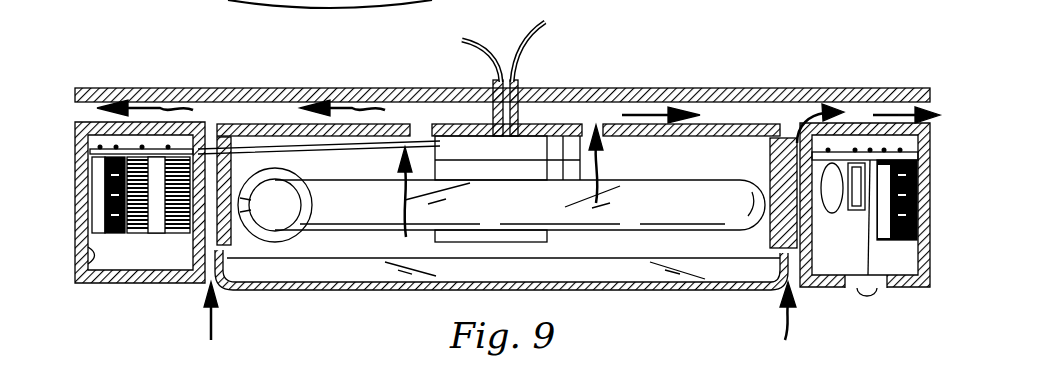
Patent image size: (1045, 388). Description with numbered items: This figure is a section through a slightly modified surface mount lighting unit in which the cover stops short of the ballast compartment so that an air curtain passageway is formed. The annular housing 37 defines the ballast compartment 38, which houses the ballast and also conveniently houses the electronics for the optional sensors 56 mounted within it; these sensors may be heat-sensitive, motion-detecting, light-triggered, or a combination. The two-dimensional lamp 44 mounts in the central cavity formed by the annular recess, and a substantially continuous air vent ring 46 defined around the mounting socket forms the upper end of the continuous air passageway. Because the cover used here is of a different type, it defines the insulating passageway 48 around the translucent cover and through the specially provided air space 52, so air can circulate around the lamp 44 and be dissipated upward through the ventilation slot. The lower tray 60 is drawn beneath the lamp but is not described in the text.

The annular housing 37 is at (74, 169).
The ballast compartment 38 is at (86, 282).
The 2-D lamp 44 is at (668, 207).
The air vent ring 46 is at (418, 130).
The insulating passageway 48 is at (265, 315).
The air space 52 is at (563, 115).
The sensor 56 is at (866, 292).
The reflector tray 60 is at (590, 274).